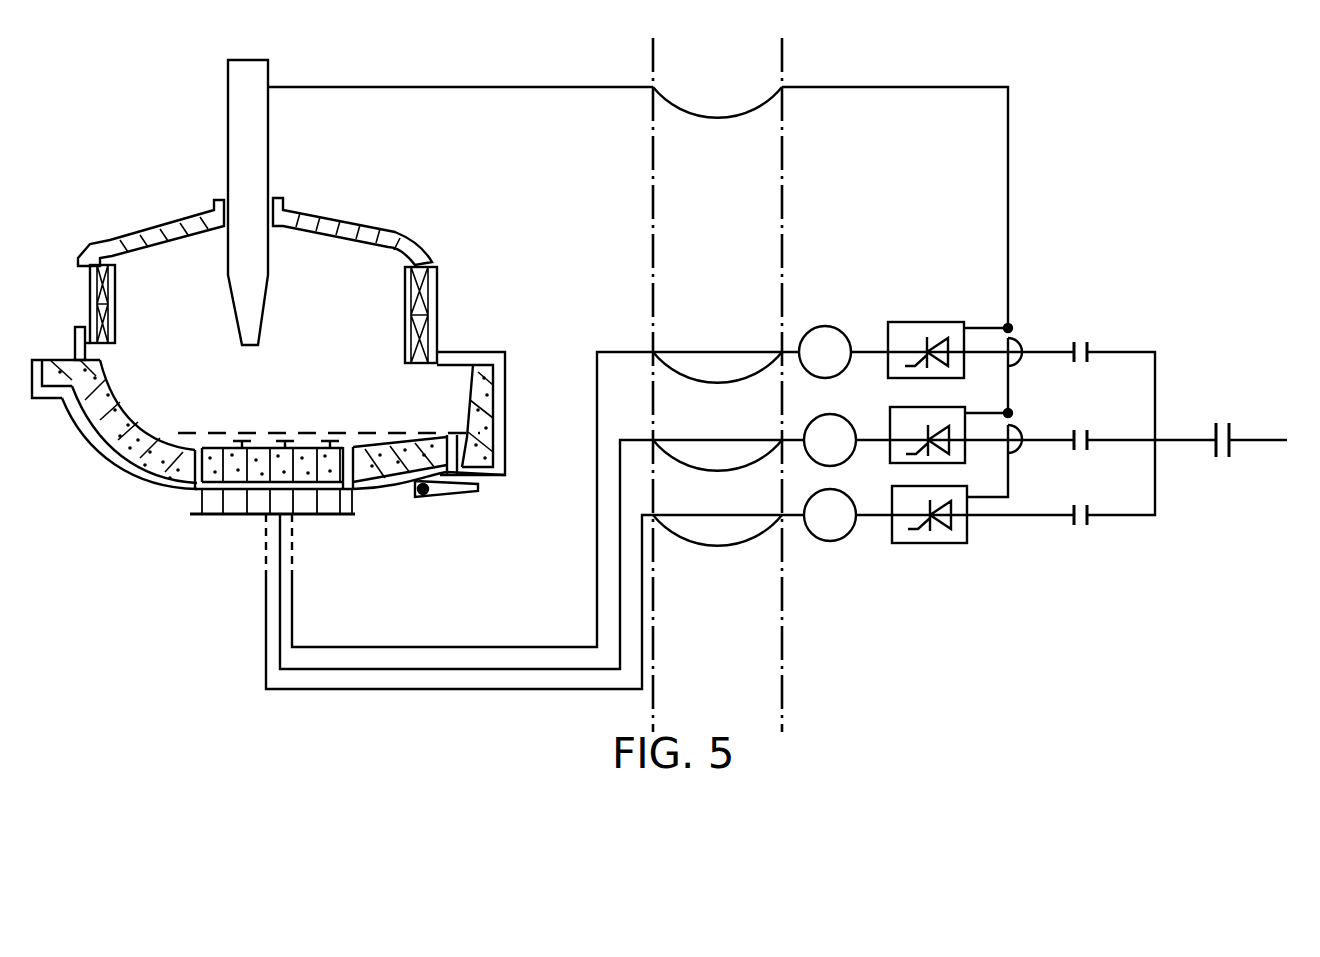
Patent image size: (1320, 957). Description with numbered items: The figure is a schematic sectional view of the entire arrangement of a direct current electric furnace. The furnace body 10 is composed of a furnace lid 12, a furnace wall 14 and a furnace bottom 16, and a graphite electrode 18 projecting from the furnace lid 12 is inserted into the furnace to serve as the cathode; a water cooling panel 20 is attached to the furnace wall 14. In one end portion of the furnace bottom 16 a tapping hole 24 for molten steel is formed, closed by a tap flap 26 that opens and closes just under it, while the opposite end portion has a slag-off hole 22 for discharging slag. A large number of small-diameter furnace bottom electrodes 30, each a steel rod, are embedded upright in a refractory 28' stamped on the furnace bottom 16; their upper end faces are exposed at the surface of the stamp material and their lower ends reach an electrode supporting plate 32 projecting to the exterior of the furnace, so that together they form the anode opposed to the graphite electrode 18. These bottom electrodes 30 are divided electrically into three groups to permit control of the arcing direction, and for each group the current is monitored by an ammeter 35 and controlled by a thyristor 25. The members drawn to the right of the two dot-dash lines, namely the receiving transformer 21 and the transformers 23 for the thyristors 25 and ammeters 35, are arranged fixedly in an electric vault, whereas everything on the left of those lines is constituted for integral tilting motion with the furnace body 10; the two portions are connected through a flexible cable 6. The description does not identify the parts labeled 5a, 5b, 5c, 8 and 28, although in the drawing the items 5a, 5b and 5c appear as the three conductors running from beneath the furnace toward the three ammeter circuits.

The power lead 5a is at (422, 645).
The power lead 5b is at (452, 667).
The power lead 5c is at (450, 690).
The flexible cable 6 is at (688, 112).
The melt 8 is at (262, 432).
The furnace body 10 is at (437, 222).
The furnace lid 12 is at (348, 220).
The furnace wall 14 is at (437, 292).
The furnace bottom 16 is at (110, 470).
The graphite electrode 18 is at (228, 142).
The water cooling panel 20 is at (115, 295).
The receiving transformer 21 is at (1222, 425).
The slag-off hole 22 is at (50, 358).
The transformers 23 is at (1080, 340).
The tapping hole 24 is at (468, 428).
The thyristor 25 is at (925, 321).
The tap flap 26 is at (445, 500).
The hearth bottom 28 is at (350, 530).
The refractory 28' is at (255, 418).
The furnace bottom electrodes 30 is at (335, 447).
The electrode supporting plate 32 is at (232, 517).
The ammeter 35 is at (825, 326).